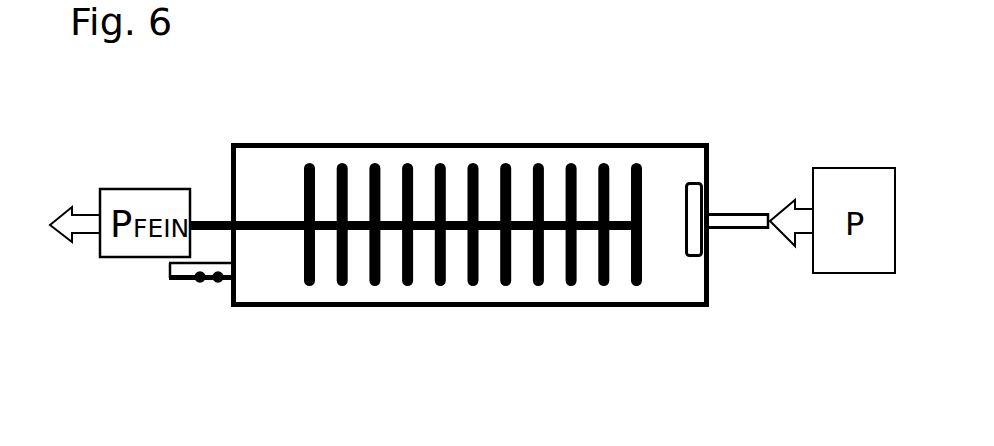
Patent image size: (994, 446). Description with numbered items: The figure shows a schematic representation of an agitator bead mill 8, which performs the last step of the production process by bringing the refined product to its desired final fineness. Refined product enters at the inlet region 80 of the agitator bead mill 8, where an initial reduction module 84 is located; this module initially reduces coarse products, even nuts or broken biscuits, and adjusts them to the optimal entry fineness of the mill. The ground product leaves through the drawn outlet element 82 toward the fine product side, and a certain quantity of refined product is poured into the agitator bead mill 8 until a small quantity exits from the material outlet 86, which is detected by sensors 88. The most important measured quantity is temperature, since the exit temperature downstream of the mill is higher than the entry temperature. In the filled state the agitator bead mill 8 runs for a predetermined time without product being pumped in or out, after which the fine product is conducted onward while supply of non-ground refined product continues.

The agitator bead mill 8 is at (567, 352).
The inlet region 80 is at (763, 231).
The outlet shaft 82 is at (207, 219).
The initial reduction module 84 is at (712, 192).
The material outlet 86 is at (168, 279).
The sensors 88 is at (200, 281).